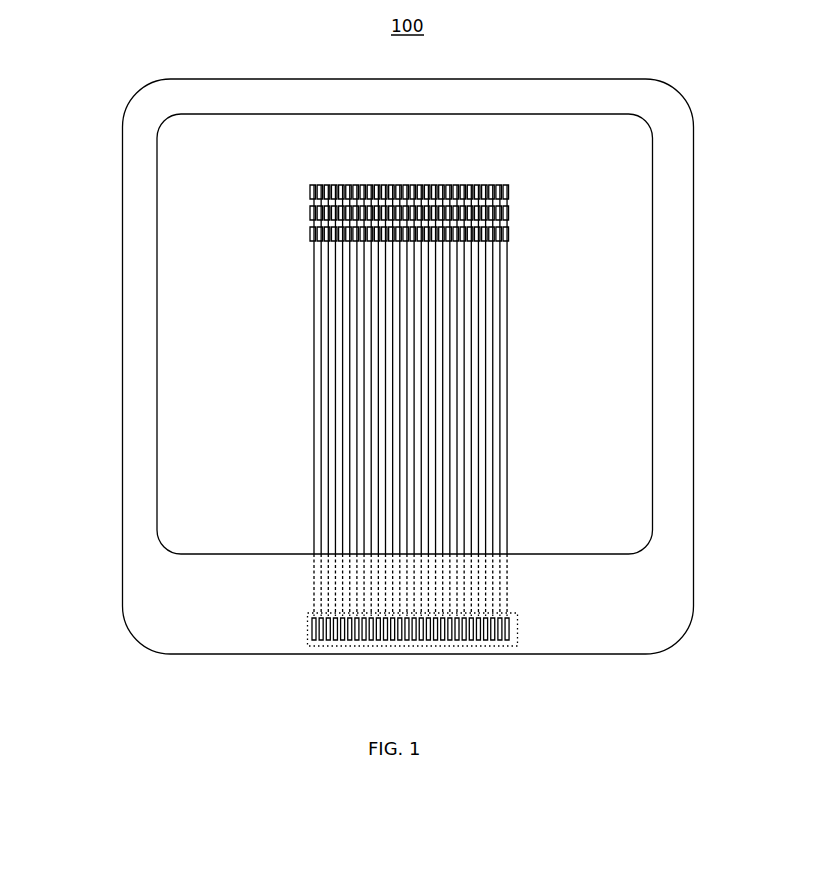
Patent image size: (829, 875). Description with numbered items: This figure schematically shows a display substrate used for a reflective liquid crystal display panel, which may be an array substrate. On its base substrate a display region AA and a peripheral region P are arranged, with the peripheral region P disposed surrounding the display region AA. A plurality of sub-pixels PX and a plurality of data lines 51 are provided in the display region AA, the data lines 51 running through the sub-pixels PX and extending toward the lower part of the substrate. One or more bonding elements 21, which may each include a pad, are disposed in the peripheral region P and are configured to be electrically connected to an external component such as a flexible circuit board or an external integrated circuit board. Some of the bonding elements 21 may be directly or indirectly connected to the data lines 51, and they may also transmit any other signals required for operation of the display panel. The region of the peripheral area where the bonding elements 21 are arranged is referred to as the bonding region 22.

The peripheral region P is at (677, 501).
The display region AA is at (623, 432).
The sub-pixels PX is at (314, 186).
The data lines 51 is at (316, 378).
The bonding elements 21 is at (331, 632).
The bonding region 22 is at (518, 632).